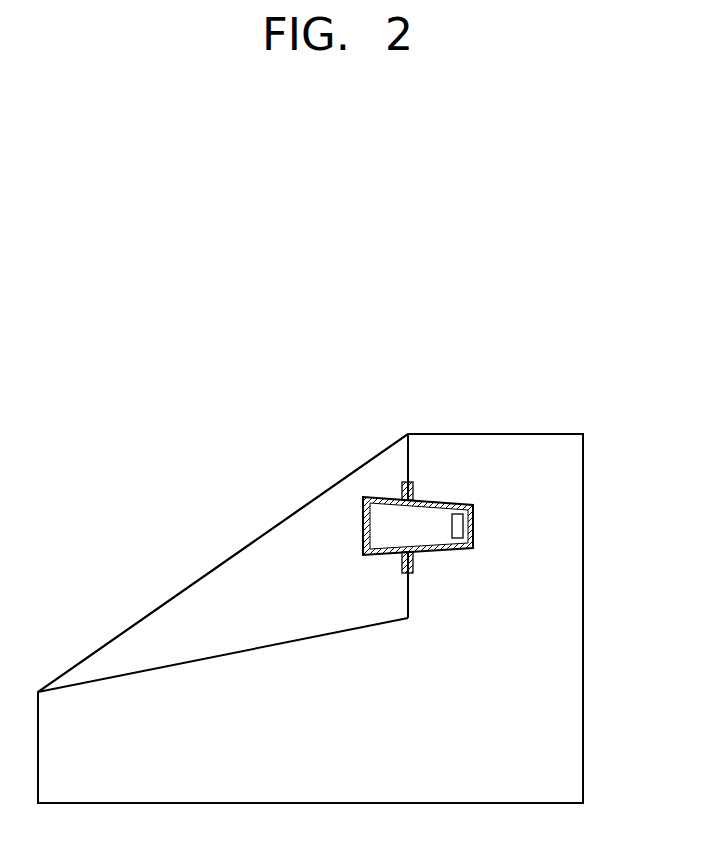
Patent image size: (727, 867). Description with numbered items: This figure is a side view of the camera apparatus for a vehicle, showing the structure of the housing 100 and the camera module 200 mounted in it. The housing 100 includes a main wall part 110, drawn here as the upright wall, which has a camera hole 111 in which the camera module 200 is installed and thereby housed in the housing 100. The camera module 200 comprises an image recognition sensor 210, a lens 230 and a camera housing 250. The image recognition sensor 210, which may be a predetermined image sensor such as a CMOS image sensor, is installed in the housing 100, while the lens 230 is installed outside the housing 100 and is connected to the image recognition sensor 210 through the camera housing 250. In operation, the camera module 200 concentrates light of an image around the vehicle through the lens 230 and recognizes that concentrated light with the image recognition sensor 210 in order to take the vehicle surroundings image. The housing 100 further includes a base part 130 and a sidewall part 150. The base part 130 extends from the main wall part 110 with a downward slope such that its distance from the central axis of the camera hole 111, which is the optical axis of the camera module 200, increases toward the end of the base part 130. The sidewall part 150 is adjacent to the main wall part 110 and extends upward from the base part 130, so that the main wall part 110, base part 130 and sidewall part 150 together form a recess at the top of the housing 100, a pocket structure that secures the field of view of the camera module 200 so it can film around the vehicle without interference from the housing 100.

The housing 100 is at (546, 453).
The main wall part 110 is at (409, 595).
The camera hole 111 is at (412, 565).
The base part 130 is at (165, 665).
The sidewall part 150 is at (237, 603).
The camera module 200 is at (488, 466).
The image recognition sensor 210 is at (462, 513).
The lens 230 is at (367, 527).
The camera housing 250 is at (381, 496).